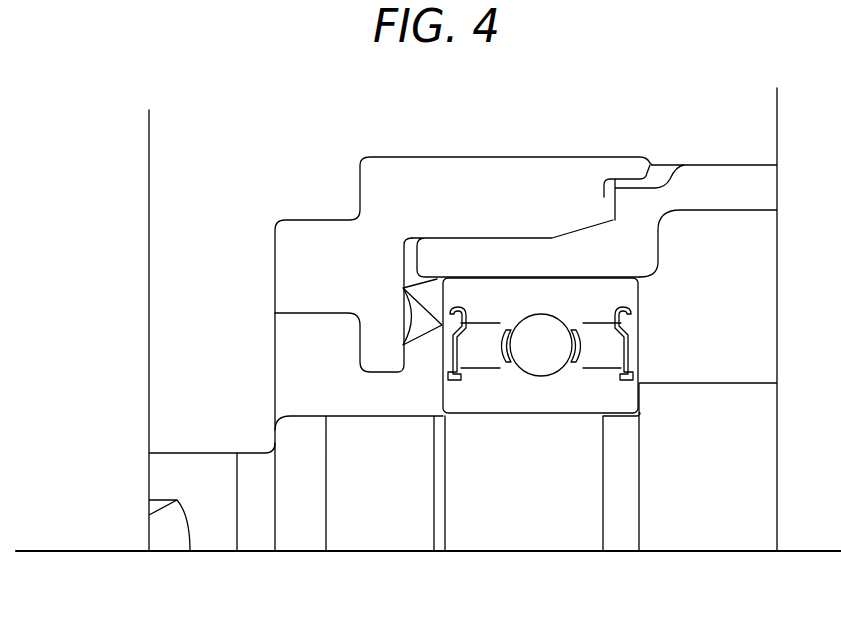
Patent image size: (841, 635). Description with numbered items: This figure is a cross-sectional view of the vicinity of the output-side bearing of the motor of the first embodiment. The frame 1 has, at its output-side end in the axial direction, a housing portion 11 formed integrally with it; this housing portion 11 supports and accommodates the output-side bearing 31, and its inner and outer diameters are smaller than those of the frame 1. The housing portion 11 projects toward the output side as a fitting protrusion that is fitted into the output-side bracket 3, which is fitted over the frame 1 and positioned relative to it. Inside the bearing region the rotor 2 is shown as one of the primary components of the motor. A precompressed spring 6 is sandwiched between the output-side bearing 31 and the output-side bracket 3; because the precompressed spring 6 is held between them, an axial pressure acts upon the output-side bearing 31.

The frame 1 is at (712, 163).
The rotor 2 is at (290, 433).
The output-side bracket 3 is at (388, 173).
The precompressed spring 6 is at (403, 288).
The housing portion 11 is at (500, 250).
The output-side bearing 31 is at (538, 372).